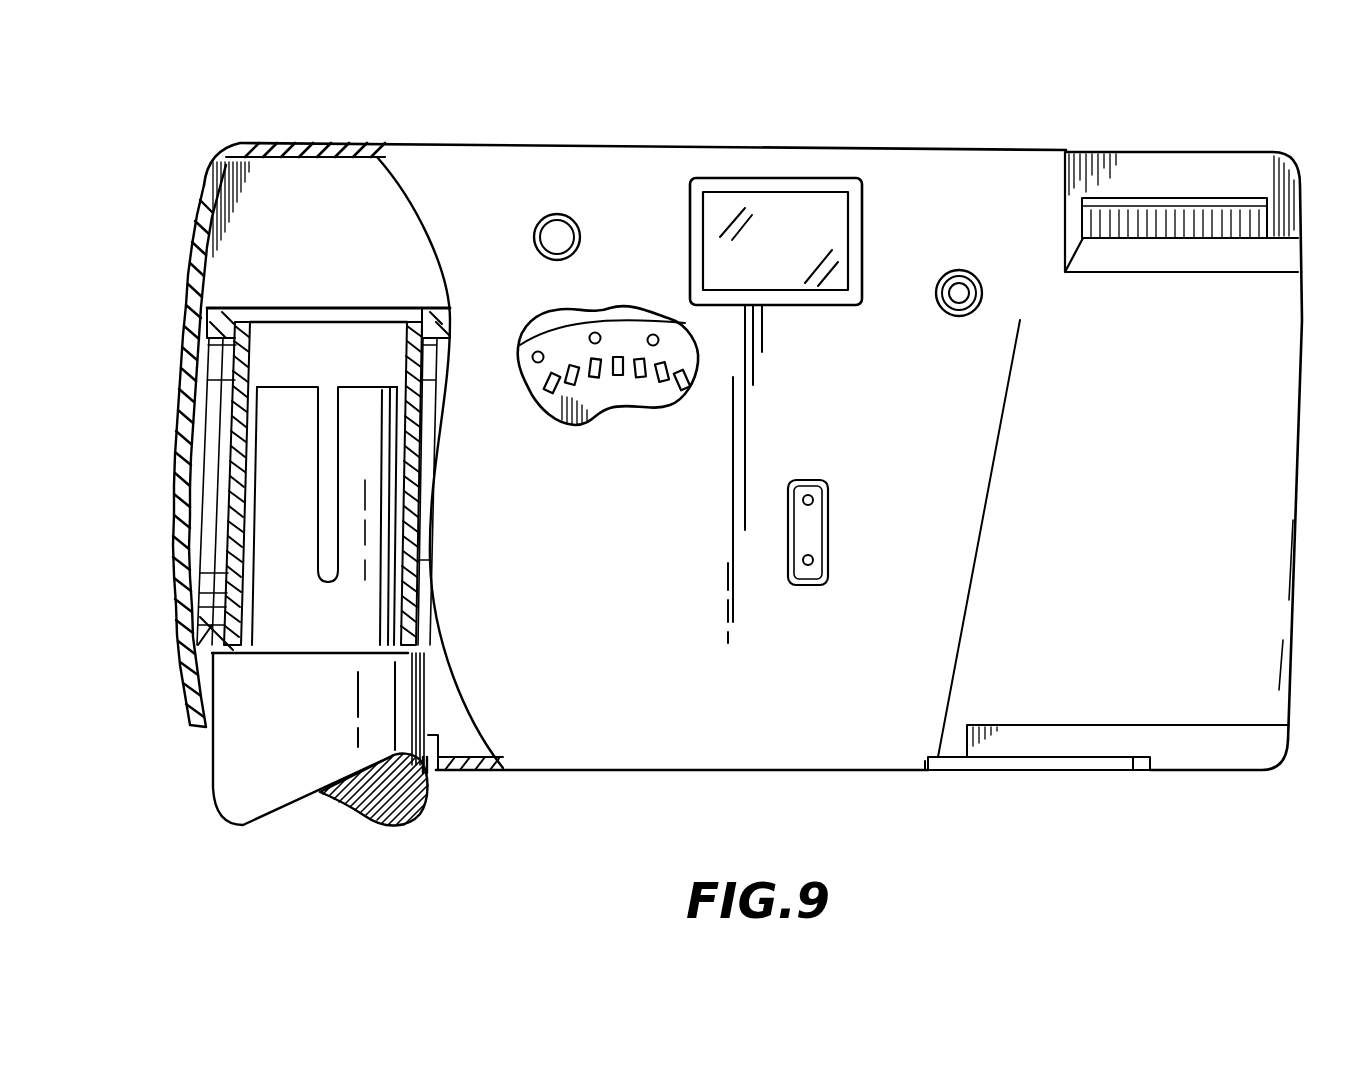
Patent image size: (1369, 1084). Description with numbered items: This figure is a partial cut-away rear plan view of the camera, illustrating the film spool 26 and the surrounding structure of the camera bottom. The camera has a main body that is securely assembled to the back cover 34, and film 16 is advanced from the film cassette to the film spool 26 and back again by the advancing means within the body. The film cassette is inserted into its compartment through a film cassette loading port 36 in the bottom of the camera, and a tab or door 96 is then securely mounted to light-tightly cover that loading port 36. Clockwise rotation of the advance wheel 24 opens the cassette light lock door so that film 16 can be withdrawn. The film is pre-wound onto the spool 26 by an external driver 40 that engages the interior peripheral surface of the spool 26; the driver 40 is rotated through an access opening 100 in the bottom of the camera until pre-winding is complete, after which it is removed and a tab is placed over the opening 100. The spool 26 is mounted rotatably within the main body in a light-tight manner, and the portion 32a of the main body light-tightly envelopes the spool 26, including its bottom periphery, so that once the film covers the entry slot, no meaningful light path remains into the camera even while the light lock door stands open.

The advance wheel 24 is at (1165, 217).
The film 16 is at (196, 322).
The film spool 26 is at (212, 524).
The portion of main body 32a is at (214, 620).
The external driver 40 is at (258, 787).
The access opening 100 is at (430, 773).
The back cover 34 is at (680, 715).
The tab or door 96 is at (1155, 756).
The film cassette loading port 36 is at (1252, 753).